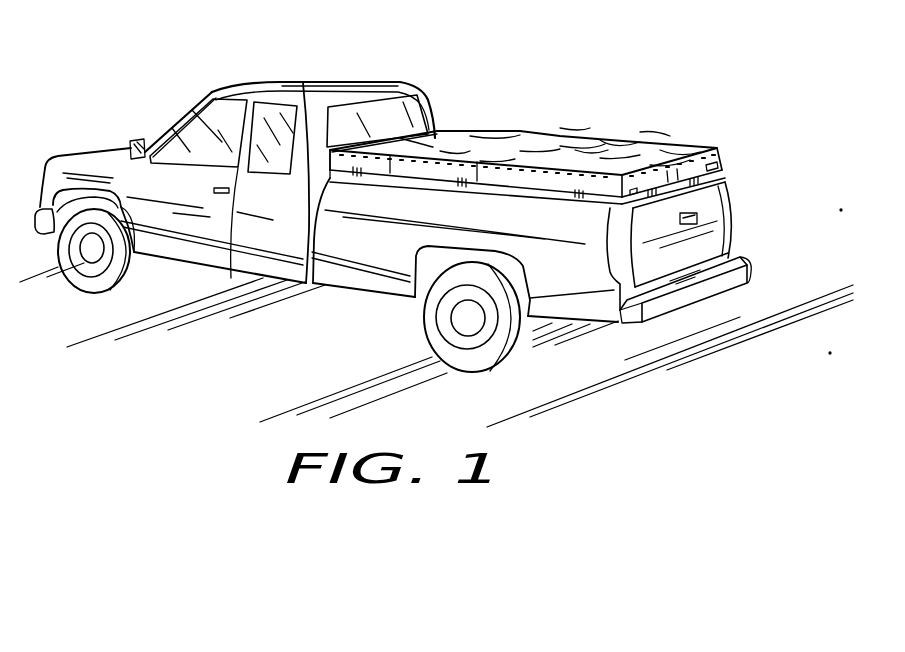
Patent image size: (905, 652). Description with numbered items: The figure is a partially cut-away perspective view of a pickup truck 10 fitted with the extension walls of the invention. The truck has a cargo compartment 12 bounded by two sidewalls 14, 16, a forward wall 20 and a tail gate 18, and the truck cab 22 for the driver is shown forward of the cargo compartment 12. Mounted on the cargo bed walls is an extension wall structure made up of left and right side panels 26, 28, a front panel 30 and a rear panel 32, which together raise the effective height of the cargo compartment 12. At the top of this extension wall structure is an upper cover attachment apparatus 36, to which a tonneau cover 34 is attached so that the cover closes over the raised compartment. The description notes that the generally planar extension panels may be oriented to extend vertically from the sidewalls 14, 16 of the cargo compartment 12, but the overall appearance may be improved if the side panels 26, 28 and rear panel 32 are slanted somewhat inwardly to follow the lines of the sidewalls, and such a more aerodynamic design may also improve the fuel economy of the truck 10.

The pickup truck 10 is at (163, 80).
The cargo compartment 12 is at (588, 333).
The sidewall 14 is at (378, 254).
The sidewall 16 is at (730, 182).
The tail gate 18 is at (712, 233).
The forward wall 20 is at (300, 238).
The truck cab 22 is at (330, 82).
The left side panel 26 is at (432, 165).
The right side panel 28 is at (722, 155).
The front panel 30 is at (325, 173).
The rear panel 32 is at (642, 178).
The tonneau cover 34 is at (590, 148).
The upper cover attachment apparatus 36 is at (517, 167).